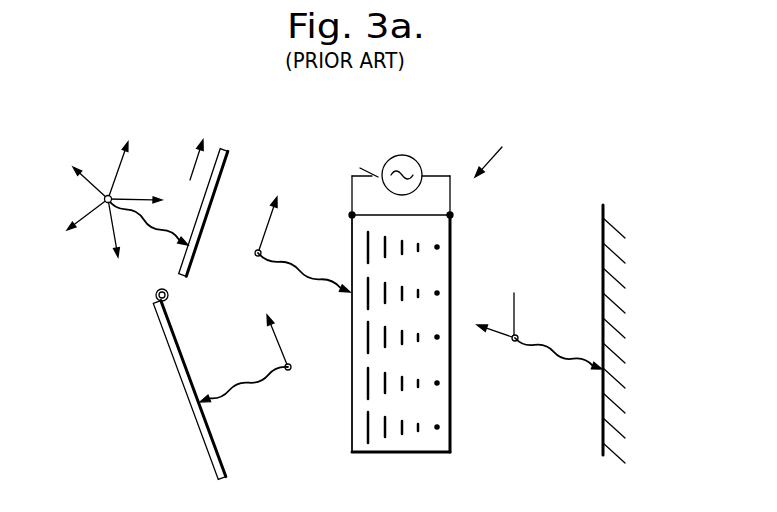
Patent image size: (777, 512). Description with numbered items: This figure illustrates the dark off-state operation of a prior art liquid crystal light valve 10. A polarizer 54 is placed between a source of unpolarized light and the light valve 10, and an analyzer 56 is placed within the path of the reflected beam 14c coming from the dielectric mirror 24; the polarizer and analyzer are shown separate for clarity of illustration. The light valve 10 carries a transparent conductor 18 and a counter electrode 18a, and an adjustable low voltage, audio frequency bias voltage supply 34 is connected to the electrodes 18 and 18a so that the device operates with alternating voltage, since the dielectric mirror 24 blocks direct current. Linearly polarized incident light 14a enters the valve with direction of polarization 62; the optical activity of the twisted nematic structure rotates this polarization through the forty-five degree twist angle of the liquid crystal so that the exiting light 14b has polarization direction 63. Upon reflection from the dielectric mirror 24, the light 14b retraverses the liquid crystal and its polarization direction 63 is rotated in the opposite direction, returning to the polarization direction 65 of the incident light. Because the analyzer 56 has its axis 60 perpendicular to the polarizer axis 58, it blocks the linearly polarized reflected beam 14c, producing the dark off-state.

The light valve 10 is at (498, 149).
The incident light 14a is at (278, 258).
The exiting light 14b is at (547, 345).
The reflected beam 14c is at (268, 378).
The transparent conductor 18 is at (452, 450).
The counter electrode 18a is at (353, 453).
The dielectric mirror 24 is at (608, 212).
The bias voltage supply 34 is at (416, 161).
The polarizer 54 is at (221, 183).
The analyzer 56 is at (202, 445).
The polarizer axis 58 is at (190, 172).
The analyzer axis 60 is at (156, 294).
The direction of polarization 62 is at (270, 220).
The polarization direction 63 is at (505, 335).
The polarization direction 65 is at (283, 352).